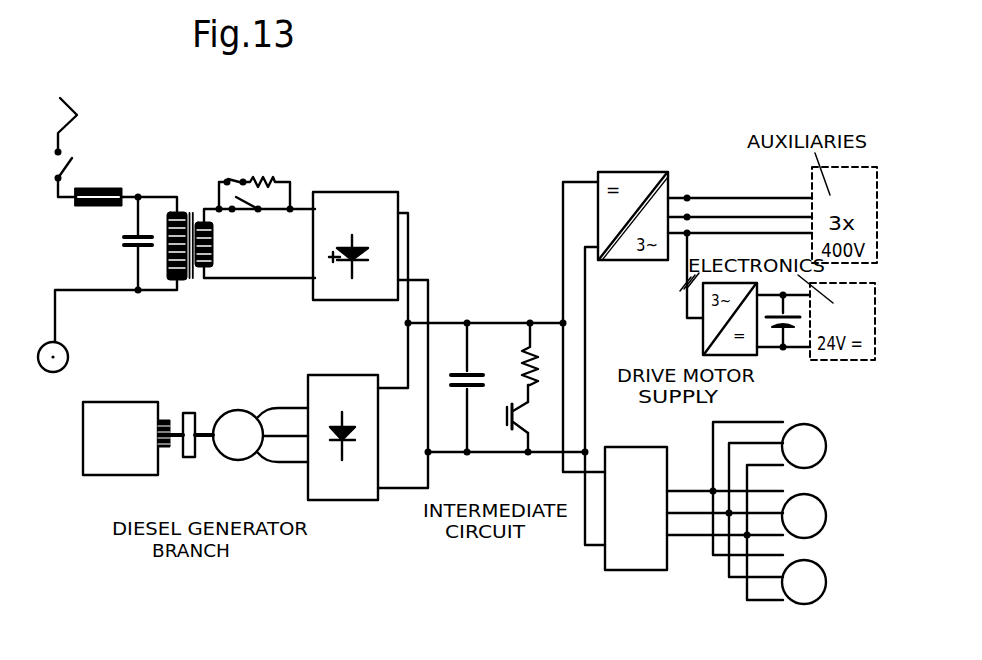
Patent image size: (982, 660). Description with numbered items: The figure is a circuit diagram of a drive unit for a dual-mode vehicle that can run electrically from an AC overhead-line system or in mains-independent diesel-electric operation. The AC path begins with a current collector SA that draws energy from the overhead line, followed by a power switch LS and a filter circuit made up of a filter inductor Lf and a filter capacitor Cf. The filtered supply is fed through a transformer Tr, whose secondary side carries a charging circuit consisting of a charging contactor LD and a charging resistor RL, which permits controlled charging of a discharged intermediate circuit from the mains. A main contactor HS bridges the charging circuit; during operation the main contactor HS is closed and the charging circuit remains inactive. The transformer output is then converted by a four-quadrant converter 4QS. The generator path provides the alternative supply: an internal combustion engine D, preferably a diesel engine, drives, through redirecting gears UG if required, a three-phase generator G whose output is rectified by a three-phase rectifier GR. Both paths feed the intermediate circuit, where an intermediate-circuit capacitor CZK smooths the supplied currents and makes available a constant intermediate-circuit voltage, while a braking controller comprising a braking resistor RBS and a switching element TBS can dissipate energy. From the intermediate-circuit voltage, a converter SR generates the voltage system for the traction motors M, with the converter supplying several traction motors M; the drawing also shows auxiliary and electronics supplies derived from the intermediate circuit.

The current collector SA is at (52, 127).
The power switch LS is at (51, 176).
The filter inductor Lf is at (106, 180).
The filter capacitor Cf is at (123, 243).
The transformer Tr is at (190, 225).
The charging contactor LD is at (232, 177).
The charging resistor RL is at (266, 177).
The main contactor HS is at (245, 218).
The four-quadrant converter 4QS is at (355, 246).
The intermediate-circuit capacitor CZK is at (447, 370).
The braking resistor RBS is at (510, 362).
The switching element TBS is at (506, 427).
The converter SR is at (636, 508).
The traction motors M is at (804, 514).
The internal combustion engine D is at (120, 440).
The redirecting gears UG is at (190, 450).
The three-phase generator G is at (238, 435).
The three-phase rectifier GR is at (343, 437).